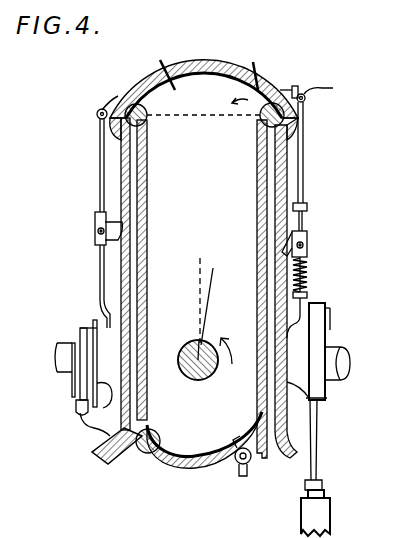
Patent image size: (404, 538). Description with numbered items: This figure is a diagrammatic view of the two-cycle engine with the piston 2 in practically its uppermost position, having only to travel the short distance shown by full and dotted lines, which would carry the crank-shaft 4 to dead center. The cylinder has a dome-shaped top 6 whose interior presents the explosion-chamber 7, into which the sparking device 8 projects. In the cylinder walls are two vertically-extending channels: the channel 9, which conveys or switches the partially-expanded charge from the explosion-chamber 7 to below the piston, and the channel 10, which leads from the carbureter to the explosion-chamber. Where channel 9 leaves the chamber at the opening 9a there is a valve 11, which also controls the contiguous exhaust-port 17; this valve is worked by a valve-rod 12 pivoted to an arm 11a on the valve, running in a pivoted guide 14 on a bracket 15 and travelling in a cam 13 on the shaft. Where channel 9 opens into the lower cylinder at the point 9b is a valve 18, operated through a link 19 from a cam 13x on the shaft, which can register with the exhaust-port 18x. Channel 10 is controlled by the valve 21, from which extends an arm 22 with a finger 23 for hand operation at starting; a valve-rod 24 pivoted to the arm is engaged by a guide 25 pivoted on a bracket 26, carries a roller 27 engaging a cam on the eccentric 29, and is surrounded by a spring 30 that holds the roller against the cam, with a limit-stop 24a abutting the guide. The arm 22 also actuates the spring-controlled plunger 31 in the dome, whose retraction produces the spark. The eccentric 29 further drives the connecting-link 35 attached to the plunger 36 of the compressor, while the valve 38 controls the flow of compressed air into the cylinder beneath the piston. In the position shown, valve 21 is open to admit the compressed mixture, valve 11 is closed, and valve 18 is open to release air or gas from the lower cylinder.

The piston 2 is at (211, 124).
The crank-shaft 4 is at (352, 362).
The dome-shaped top 6 is at (214, 62).
The explosion-chamber 7 is at (228, 113).
The sparking device 8 is at (209, 65).
The channel 9 is at (125, 170).
The opening 9a is at (152, 110).
The opening 9b is at (157, 428).
The channel 10 is at (276, 186).
The valve 11 is at (134, 102).
The arm 11a is at (97, 111).
The valve-rod 12 is at (100, 151).
The cam 13 is at (92, 332).
The cam 13x is at (80, 380).
The pivoted guide 14 is at (95, 223).
The bracket 15 is at (118, 222).
The exhaust-port 17 is at (116, 98).
The valve 18 is at (122, 452).
The exhaust-port 18x is at (150, 448).
The link 19 is at (88, 430).
The valve 21 is at (290, 118).
The arm 22 is at (305, 94).
The finger 23 is at (333, 88).
The valve-rod 24 is at (304, 153).
The limit-stop 24a is at (308, 207).
The guide 25 is at (294, 256).
The bracket 26 is at (308, 240).
The roller 27 is at (308, 295).
The eccentric 29 is at (331, 325).
The spring 30 is at (308, 274).
The spring-controlled plunger 31 is at (294, 86).
The connecting-link 35 is at (320, 440).
The plunger 36 is at (338, 513).
The valve 38 is at (237, 464).